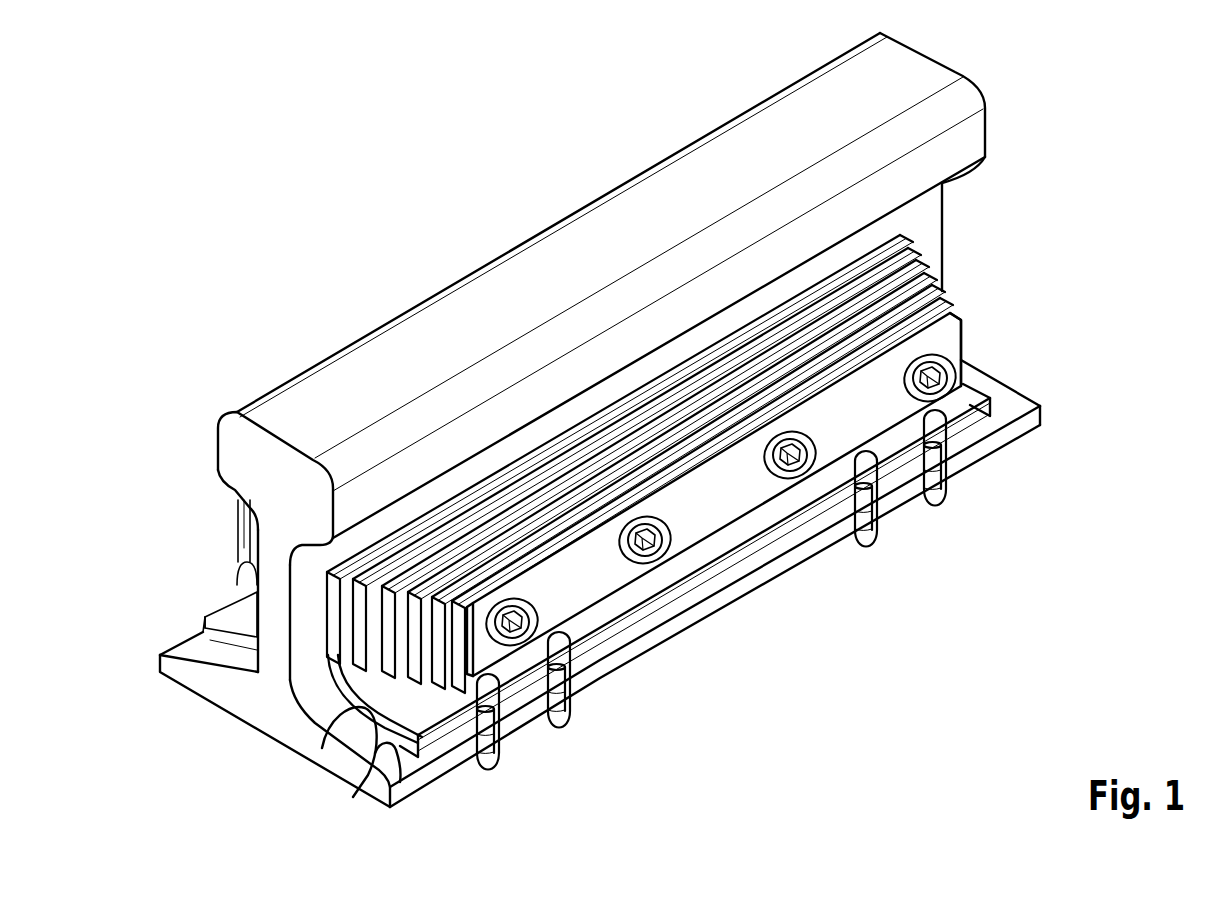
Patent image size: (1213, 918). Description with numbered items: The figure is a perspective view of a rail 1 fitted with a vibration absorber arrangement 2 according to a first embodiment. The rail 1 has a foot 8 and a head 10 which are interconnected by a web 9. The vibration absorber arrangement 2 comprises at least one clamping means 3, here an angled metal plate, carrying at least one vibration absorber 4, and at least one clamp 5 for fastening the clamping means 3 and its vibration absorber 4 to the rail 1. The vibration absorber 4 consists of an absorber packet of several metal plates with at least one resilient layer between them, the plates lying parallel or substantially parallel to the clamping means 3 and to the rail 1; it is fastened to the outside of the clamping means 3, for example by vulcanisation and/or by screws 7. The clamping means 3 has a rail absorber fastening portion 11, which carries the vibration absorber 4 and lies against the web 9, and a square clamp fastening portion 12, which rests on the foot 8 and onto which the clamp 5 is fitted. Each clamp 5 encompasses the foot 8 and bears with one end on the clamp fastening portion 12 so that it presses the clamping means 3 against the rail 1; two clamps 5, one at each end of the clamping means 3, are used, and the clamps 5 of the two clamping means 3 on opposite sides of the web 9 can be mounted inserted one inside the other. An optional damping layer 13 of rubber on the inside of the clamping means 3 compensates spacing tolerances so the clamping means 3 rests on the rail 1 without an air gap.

The rail 1 is at (326, 350).
The vibration absorber arrangement 2 is at (718, 566).
The clamping means 3 is at (760, 528).
The vibration absorber 4 is at (950, 338).
The clamp 5 is at (551, 745).
The screw 7 is at (938, 380).
The foot 8 is at (200, 688).
The web 9 is at (272, 546).
The head 10 is at (234, 440).
The rail absorber fastening portion 11 is at (353, 797).
The clamp fastening portion 12 is at (660, 611).
The damping layer 13 is at (335, 740).